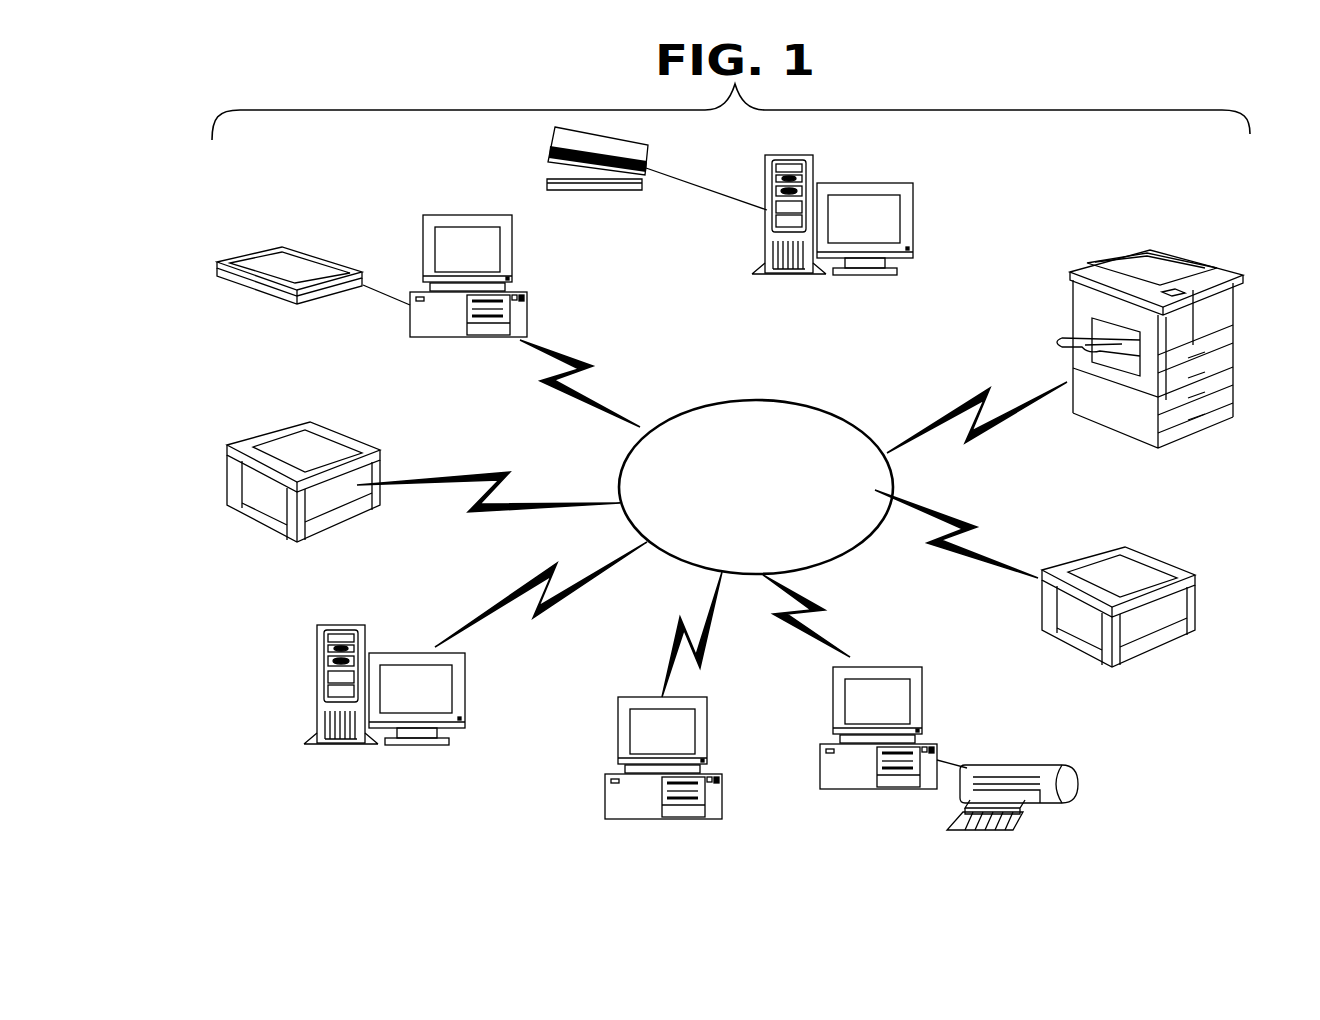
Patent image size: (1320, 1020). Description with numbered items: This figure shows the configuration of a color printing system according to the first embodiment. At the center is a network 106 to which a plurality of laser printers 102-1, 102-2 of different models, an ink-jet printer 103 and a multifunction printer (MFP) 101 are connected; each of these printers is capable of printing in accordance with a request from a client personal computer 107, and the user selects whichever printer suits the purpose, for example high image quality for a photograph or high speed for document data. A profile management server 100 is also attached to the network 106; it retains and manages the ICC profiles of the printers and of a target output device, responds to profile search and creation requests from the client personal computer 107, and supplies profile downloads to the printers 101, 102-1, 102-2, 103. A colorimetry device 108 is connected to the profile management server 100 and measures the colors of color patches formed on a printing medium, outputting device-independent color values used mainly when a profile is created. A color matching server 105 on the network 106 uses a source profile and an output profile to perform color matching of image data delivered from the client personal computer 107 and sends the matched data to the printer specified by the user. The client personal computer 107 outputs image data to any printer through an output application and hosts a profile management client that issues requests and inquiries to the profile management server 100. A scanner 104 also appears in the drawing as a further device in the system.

The profile management server 100 is at (915, 206).
The multifunction printer (MFP) 101 is at (1155, 252).
The laser printer 102-1 is at (353, 431).
The laser printer 102-2 is at (1160, 555).
The ink-jet printer 103 is at (1080, 773).
The scanner 104 is at (313, 257).
The color matching server 105 is at (466, 690).
The network 106 is at (715, 400).
The client personal computer 107 is at (705, 720).
The colorimetry device 108 is at (546, 148).